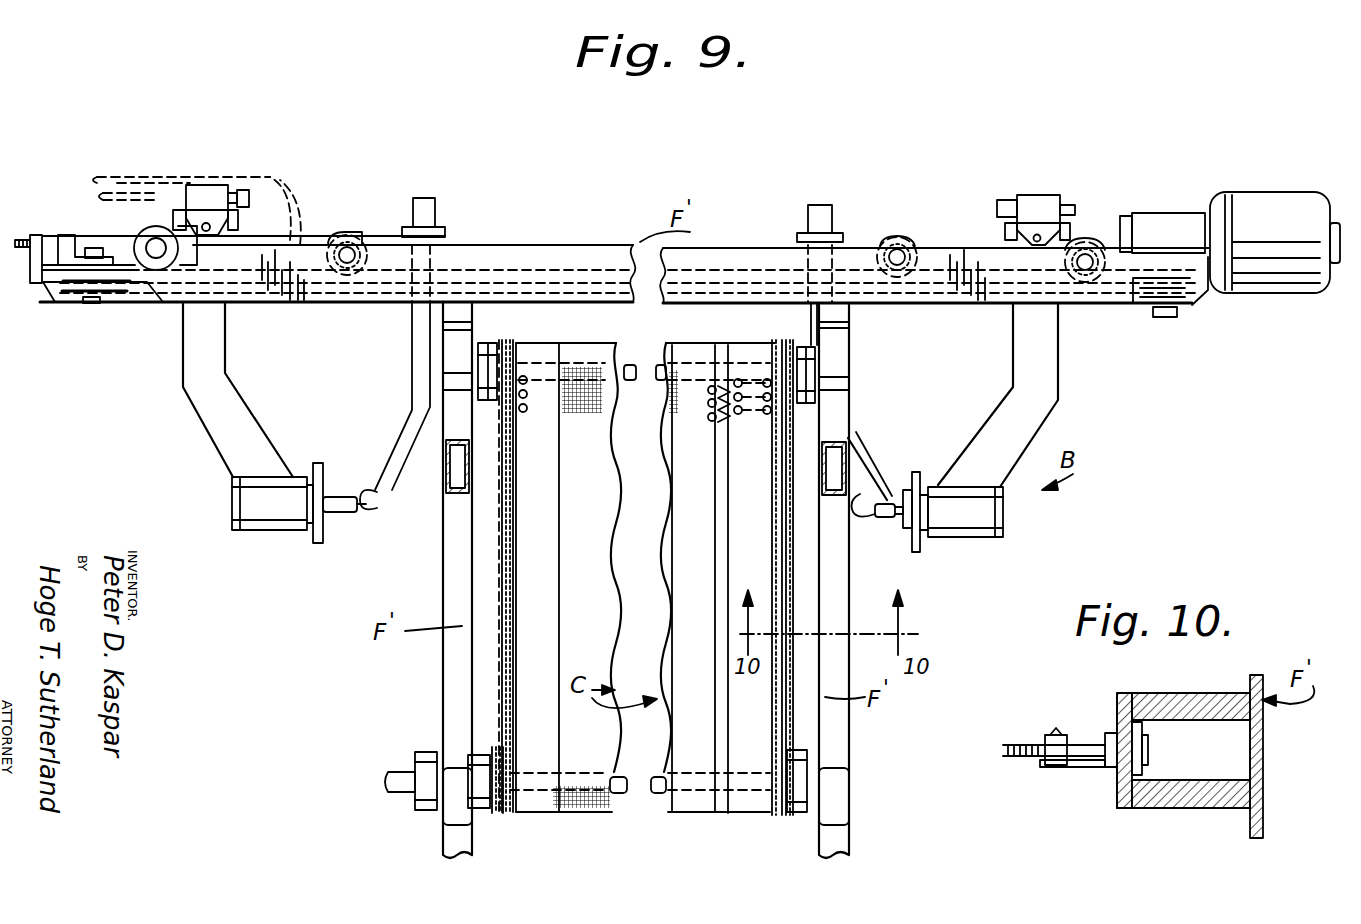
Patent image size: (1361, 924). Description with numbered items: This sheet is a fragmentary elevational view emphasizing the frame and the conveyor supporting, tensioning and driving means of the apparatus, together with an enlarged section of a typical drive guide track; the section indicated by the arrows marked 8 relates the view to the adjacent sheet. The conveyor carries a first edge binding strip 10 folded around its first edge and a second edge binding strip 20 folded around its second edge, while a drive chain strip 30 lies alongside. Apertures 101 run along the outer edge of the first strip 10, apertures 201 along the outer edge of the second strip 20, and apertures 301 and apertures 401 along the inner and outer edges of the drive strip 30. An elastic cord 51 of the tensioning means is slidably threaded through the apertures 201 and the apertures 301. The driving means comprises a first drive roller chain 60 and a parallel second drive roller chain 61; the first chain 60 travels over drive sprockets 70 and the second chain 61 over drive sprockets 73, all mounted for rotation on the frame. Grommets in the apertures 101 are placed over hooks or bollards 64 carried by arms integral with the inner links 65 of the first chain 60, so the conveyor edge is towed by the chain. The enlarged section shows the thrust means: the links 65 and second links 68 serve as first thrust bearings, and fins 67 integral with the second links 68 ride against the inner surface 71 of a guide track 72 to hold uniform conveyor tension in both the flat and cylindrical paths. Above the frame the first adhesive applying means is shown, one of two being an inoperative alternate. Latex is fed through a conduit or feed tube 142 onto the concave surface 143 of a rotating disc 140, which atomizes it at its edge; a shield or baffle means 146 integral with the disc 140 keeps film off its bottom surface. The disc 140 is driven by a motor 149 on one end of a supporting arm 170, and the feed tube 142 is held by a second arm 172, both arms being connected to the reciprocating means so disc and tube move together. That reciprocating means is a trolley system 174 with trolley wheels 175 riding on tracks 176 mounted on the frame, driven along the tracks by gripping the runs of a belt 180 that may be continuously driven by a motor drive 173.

In FIG. 9, the section line 8- 8 is at (649, 205).
In FIG. 9, the first conveyor edge binding strip 10 is at (533, 563).
In FIG. 9, the second conveyor edge binding strip 20 is at (690, 583).
In FIG. 9, the drive chain strip 30 is at (680, 528).
In FIG. 9, the elastic cord 51 is at (725, 428).
In FIG. 9, the first drive roller chain 60 is at (520, 326).
In FIG. 9, the second drive roller chain 61 is at (797, 347).
In FIG. 9, the hook or bollard 64 is at (528, 396).
In FIG. 10, the inner link 65 is at (1143, 764).
In FIG. 10, the fin or extension 67 is at (1142, 738).
In FIG. 10, the second link 68 is at (1105, 738).
In FIG. 9, the drive sprocket 70 is at (525, 358).
In FIG. 10, the inner surface of guide track 71 is at (1148, 702).
In FIG. 9, the guide track 72 is at (483, 680).
In FIG. 10, the guide track 72 is at (1218, 695).
In FIG. 9, the drive sprocket 73 is at (763, 364).
In FIG. 9, the aperture 101 is at (523, 411).
In FIG. 9, the rotating disc 140 is at (340, 500).
In FIG. 9, the conduit means or feed tube 142 is at (377, 512).
In FIG. 9, the concave surface 143 is at (893, 500).
In FIG. 9, the shield or baffle means 146 is at (317, 540).
In FIG. 9, the motor 149 is at (248, 493).
In FIG. 9, the supporting arm 170 is at (213, 357).
In FIG. 9, the second arm 172 is at (418, 375).
In FIG. 9, the motor drive 173 is at (1187, 218).
In FIG. 9, the trolley system 174 is at (282, 235).
In FIG. 9, the trolley wheel 175 is at (160, 232).
In FIG. 9, the track 176 is at (42, 302).
In FIG. 9, the belt 180 is at (128, 297).
In FIG. 9, the aperture 201 is at (700, 388).
In FIG. 9, the aperture 301 is at (752, 415).
In FIG. 9, the aperture 401 is at (777, 429).